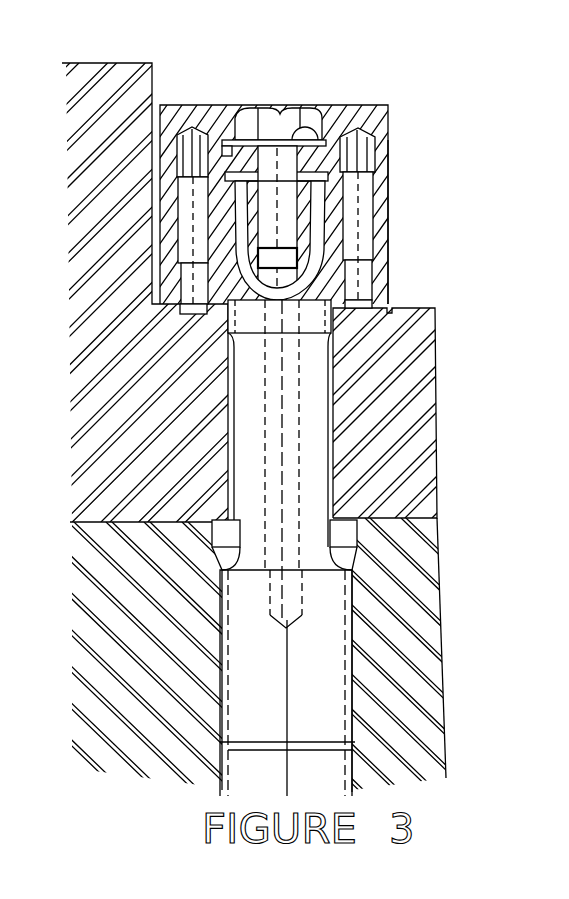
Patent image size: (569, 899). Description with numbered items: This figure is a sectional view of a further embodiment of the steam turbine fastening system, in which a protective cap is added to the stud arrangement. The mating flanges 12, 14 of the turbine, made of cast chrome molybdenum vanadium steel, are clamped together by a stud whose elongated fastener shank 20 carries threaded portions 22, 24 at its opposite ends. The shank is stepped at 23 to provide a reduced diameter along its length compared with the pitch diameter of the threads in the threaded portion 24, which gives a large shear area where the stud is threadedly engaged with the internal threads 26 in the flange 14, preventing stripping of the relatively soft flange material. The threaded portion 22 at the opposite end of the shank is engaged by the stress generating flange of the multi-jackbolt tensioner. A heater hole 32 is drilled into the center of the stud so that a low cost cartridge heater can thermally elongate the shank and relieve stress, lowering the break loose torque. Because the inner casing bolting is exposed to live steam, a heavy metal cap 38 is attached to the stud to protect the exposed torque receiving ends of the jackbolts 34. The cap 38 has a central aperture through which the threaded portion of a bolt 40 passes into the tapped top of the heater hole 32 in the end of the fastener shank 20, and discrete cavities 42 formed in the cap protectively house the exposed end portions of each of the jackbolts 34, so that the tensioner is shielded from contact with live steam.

The mating flange 12 is at (284, 292).
The mating flange 14 is at (284, 653).
The fastener shank 20 is at (375, 460).
The threaded portion 22 is at (347, 239).
The stepped portion of shank 23 is at (372, 516).
The threaded portion 24 is at (377, 675).
The internal threads 26 is at (377, 734).
The heater hole 32 is at (359, 242).
The jackbolts 34 is at (274, 187).
The heavy metal cap 38 is at (270, 181).
The bolt 40 is at (275, 176).
The discrete cavities 42 is at (423, 198).